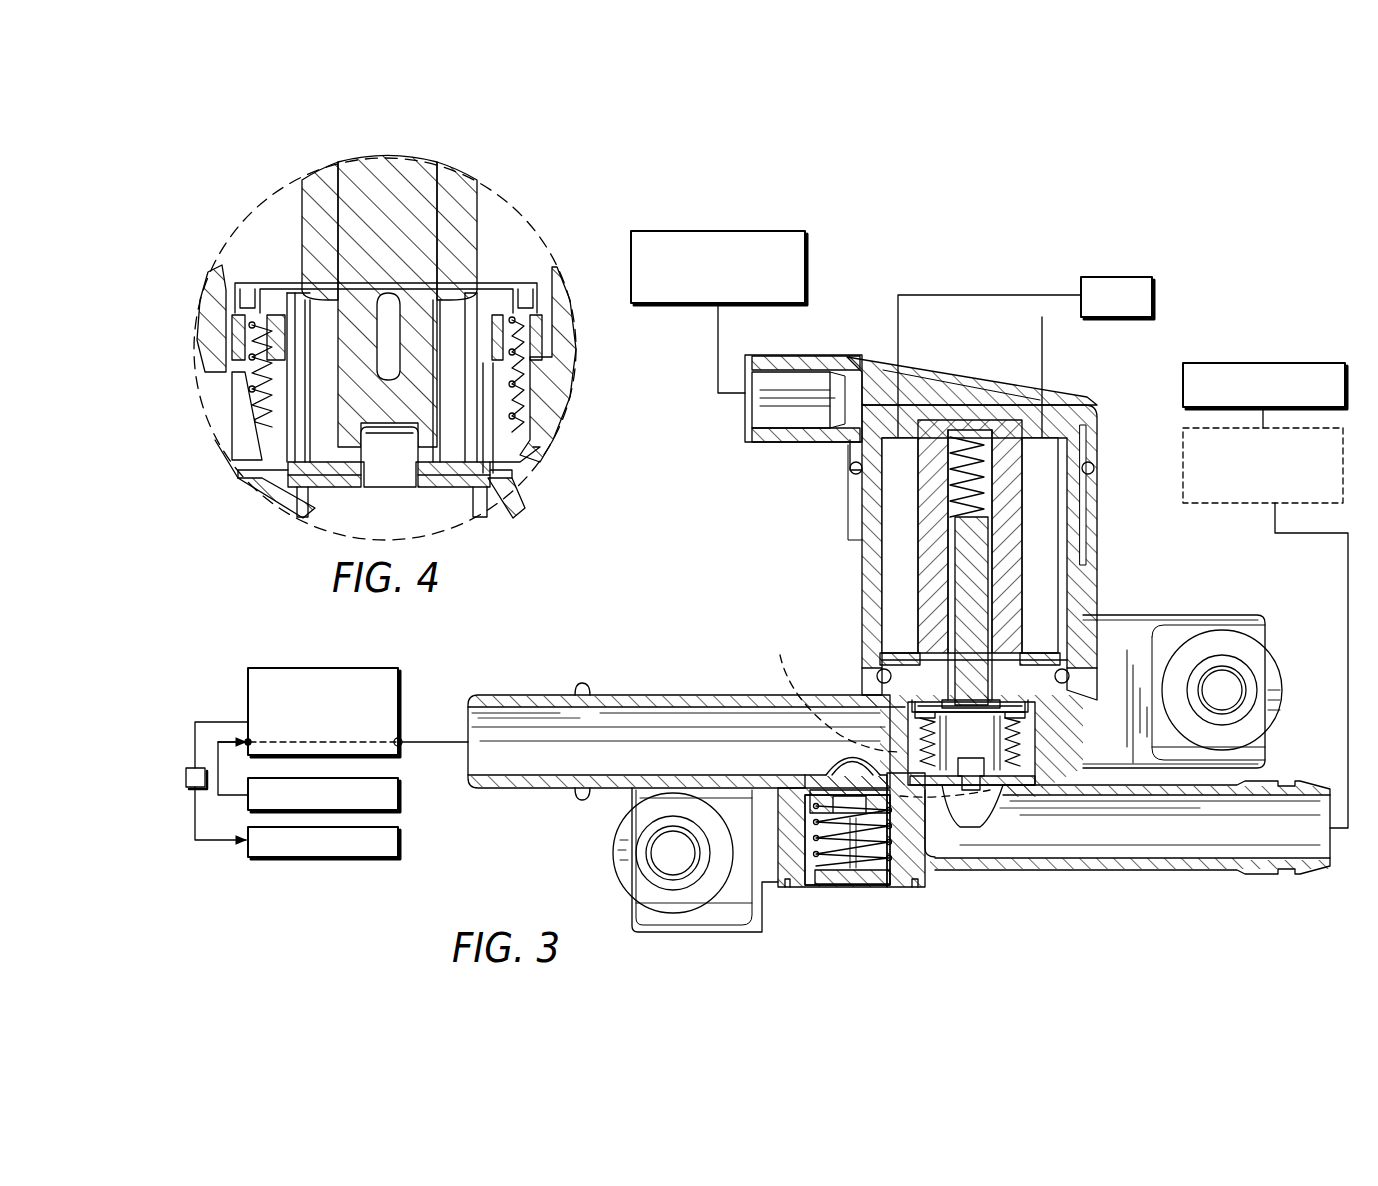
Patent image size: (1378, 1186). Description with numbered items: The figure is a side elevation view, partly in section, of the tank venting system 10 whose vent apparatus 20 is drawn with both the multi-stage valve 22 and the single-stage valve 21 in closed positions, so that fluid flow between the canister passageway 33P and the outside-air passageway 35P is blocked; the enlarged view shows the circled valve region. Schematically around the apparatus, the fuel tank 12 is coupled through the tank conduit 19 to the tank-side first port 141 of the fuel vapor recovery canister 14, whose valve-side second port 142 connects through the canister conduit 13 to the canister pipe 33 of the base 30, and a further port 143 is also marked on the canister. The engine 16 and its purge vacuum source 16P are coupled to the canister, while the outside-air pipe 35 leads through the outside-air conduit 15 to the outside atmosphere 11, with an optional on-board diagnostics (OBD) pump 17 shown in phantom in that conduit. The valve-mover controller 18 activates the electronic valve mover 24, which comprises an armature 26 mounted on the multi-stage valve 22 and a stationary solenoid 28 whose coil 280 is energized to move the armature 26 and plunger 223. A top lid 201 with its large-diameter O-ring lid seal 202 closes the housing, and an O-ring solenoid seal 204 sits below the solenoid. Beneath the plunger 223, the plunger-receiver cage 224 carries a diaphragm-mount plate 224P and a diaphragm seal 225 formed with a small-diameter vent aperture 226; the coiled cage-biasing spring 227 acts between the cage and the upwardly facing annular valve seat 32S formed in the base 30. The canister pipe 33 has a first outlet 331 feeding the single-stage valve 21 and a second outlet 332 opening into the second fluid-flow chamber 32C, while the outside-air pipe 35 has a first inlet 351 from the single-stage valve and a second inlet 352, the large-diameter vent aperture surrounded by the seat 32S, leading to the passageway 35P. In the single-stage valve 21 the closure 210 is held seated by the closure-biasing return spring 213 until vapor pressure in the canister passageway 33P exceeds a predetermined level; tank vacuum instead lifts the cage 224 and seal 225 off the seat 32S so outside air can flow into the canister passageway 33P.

In FIG. 3, the tank venting system 10 is at (1195, 285).
In FIG. 3, the outside atmosphere 11 is at (1265, 363).
In FIG. 3, the fuel tank 12 is at (393, 778).
In FIG. 3, the canister conduit 13 is at (440, 742).
In FIG. 3, the fuel vapor recovery canister 14 is at (303, 665).
In FIG. 3, the outside-air conduit 15 is at (1348, 690).
In FIG. 3, the engine 16 is at (398, 840).
In FIG. 3, the purge vacuum source 16P is at (190, 789).
In FIG. 3, the on-board diagnostics (OBD) pump 17 is at (1183, 462).
In FIG. 3, the valve-mover controller 18 is at (718, 231).
In FIG. 3, the tank conduit 19 is at (240, 796).
In FIG. 3, the vent apparatus 20 is at (555, 655).
In FIG. 3, the single-stage valve 21 is at (825, 892).
In FIG. 3, the multi-stage valve 22 is at (965, 700).
In FIG. 4, the multi-stage valve 22 is at (515, 265).
In FIG. 3, the electronic valve mover 24 is at (790, 531).
In FIG. 3, the armature 26 is at (938, 688).
In FIG. 4, the armature 26 is at (484, 220).
In FIG. 3, the stationary solenoid 28 is at (860, 540).
In FIG. 3, the base 30 is at (860, 630).
In FIG. 4, the base 30 is at (203, 300).
In FIG. 4, the second fluid-flow chamber 32C is at (278, 228).
In FIG. 4, the upwardly facing annular valve seat 32S is at (478, 472).
In FIG. 3, the canister pipe 33 is at (612, 695).
In FIG. 3, the canister passageway 33P is at (530, 748).
In FIG. 3, the outside-air pipe 35 is at (1120, 872).
In FIG. 3, the outside-air passageway 35P is at (1180, 833).
In FIG. 3, the tank-side first port 141 is at (248, 742).
In FIG. 3, the valve-side second port 142 is at (400, 738).
In FIG. 3, the canister tank port 143 is at (328, 745).
In FIG. 3, the top lid 201 is at (1085, 398).
In FIG. 3, the large-diameter O-ring lid seal 202 is at (850, 466).
In FIG. 3, the O-ring solenoid seal 204 is at (1088, 662).
In FIG. 3, the closure 210 is at (790, 802).
In FIG. 3, the closure-biasing return spring 213 is at (865, 884).
In FIG. 3, the plunger 223 is at (972, 545).
In FIG. 4, the plunger 223 is at (415, 158).
In FIG. 3, the plunger-receiver cage 224 is at (1030, 704).
In FIG. 4, the plunger-receiver cage 224 is at (250, 271).
In FIG. 4, the diaphragm-mount plate 224P is at (285, 490).
In FIG. 4, the diaphragm seal 225 is at (453, 492).
In FIG. 3, the small-diameter vent aperture 226 is at (972, 792).
In FIG. 4, the small-diameter vent aperture 226 is at (382, 468).
In FIG. 4, the coiled cage-biasing spring 227 is at (518, 388).
In FIG. 3, the coil 280 is at (1115, 277).
In FIG. 3, the first outlet 331 is at (845, 765).
In FIG. 3, the second outlet 332 is at (915, 750).
In FIG. 4, the second outlet 332 is at (255, 358).
In FIG. 3, the first inlet 351 is at (980, 848).
In FIG. 3, the second inlet 352 is at (997, 792).
In FIG. 4, the second inlet 352 is at (300, 500).